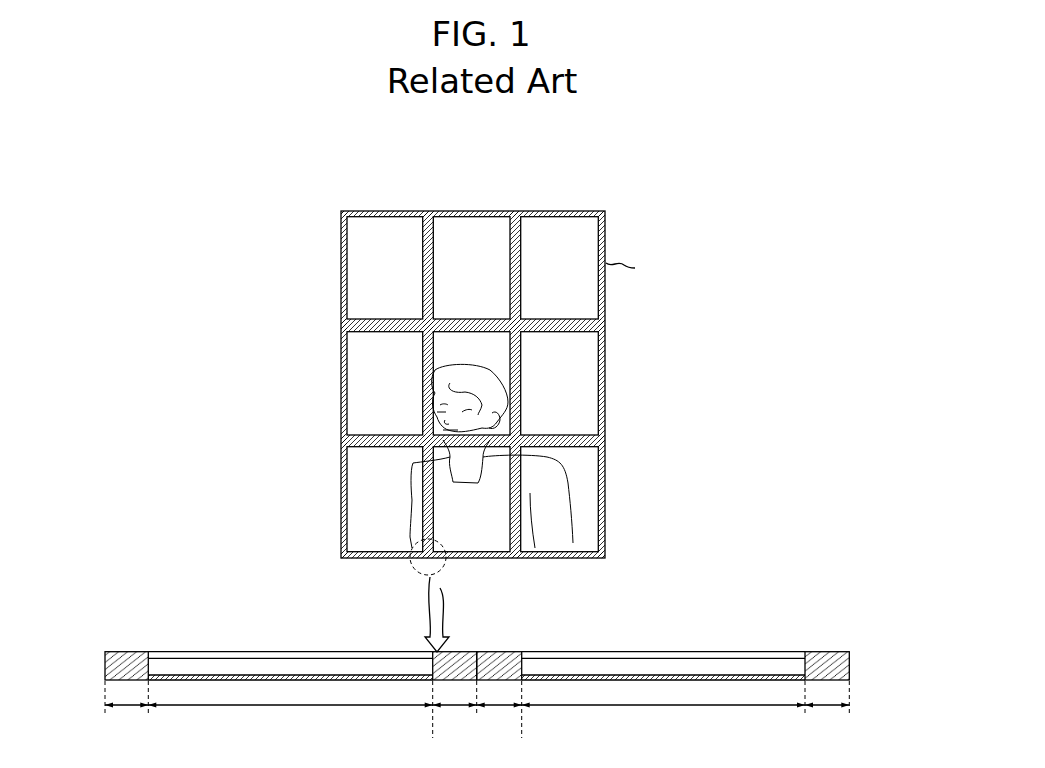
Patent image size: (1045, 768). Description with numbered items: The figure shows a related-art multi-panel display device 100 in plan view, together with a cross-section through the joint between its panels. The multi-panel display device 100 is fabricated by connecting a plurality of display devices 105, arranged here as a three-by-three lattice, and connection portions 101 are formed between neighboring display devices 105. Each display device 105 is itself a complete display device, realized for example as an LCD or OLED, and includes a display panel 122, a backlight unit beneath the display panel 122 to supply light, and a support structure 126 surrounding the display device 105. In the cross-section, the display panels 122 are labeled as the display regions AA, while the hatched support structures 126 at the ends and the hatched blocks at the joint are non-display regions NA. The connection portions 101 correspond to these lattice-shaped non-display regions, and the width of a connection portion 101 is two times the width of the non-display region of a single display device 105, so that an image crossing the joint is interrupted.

The multi-panel display device 100 is at (617, 192).
The display device 105 is at (606, 407).
The connection portion 101 is at (607, 437).
The display panel 122 is at (237, 655).
The support structure 126 is at (105, 665).